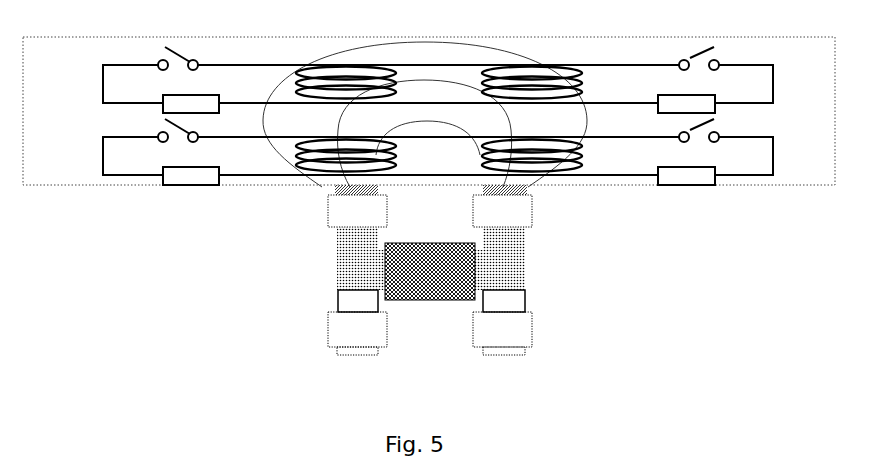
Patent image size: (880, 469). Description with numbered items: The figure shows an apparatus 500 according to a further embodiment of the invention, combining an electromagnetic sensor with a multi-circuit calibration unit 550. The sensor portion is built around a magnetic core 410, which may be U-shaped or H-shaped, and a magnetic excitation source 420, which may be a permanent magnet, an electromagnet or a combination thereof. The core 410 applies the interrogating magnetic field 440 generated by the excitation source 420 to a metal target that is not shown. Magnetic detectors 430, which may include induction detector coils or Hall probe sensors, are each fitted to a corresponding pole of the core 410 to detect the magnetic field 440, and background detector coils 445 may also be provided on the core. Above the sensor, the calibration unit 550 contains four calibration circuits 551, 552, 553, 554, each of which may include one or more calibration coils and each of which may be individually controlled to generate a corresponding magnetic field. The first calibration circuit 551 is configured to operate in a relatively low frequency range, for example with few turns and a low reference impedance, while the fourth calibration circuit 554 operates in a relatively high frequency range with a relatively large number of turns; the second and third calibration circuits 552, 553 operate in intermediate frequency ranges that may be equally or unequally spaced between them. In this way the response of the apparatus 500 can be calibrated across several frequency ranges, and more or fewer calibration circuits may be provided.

The apparatus 500 is at (213, 335).
The interrogating magnetic field 440 is at (425, 102).
The calibration unit 550 is at (429, 102).
The first calibration circuit 551 is at (245, 152).
The second calibration circuit 552 is at (630, 152).
The third calibration circuit 553 is at (245, 80).
The fourth calibration circuit 554 is at (630, 80).
The magnetic detector 430 is at (322, 222).
The magnetic core 410 is at (535, 268).
The magnetic excitation source 420 is at (430, 302).
The background detector coil 445 is at (320, 335).